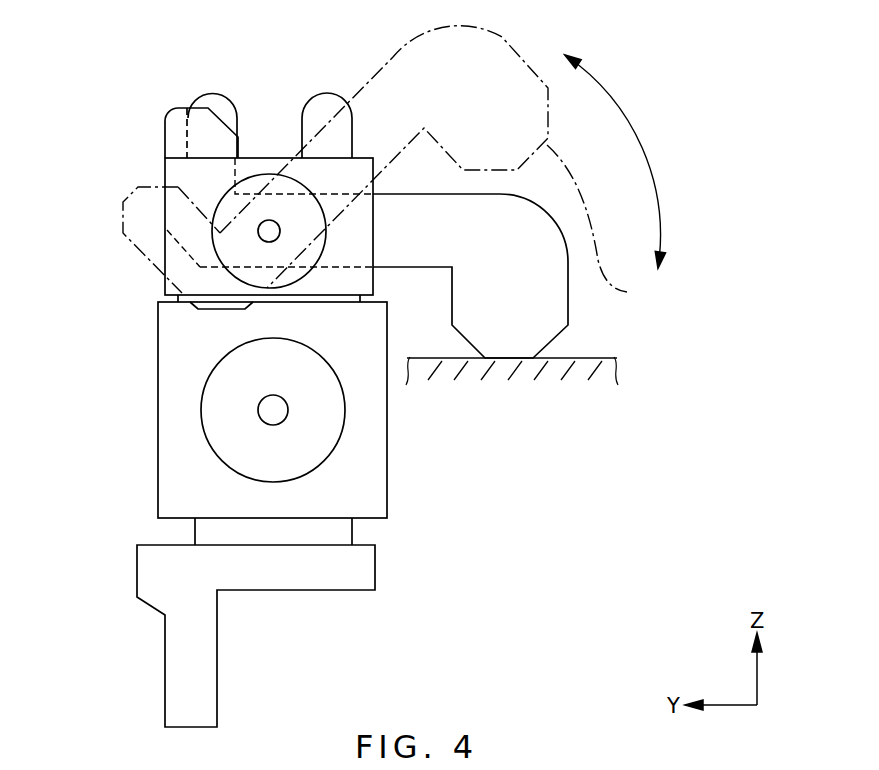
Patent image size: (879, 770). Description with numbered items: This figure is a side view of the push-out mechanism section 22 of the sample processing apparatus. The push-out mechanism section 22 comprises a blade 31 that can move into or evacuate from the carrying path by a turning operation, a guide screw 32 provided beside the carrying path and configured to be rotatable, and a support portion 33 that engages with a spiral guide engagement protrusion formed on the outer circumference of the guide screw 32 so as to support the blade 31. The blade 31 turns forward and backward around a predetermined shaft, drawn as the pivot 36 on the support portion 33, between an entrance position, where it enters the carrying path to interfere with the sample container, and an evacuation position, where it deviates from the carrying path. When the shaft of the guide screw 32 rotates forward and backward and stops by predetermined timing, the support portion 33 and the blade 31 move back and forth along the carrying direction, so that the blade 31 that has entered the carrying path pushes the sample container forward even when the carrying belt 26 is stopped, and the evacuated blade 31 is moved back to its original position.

The push-out mechanism section 22 is at (158, 350).
The carrying belt 26 is at (622, 372).
The blade 31 is at (568, 293).
The guide screw 32 is at (273, 410).
The support portion 33 is at (267, 158).
The pivot pin 36 is at (262, 226).